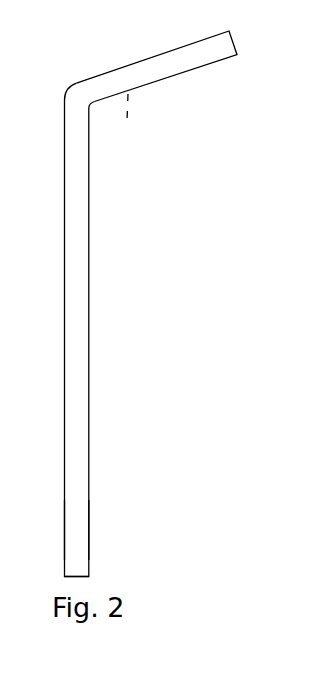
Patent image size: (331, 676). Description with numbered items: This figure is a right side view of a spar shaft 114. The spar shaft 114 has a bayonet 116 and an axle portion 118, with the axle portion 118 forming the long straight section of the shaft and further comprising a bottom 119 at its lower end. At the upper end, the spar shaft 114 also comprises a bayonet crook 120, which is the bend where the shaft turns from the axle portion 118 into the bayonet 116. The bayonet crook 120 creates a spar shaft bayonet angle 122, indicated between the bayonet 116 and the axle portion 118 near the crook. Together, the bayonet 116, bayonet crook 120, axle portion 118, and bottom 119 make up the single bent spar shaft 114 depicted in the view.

The spar shaft 114 is at (77, 220).
The bayonet 116 is at (173, 67).
The axle portion 118 is at (83, 520).
The bottom 119 is at (77, 577).
The bayonet crook 120 is at (75, 94).
The spar shaft bayonet angle 122 is at (95, 137).